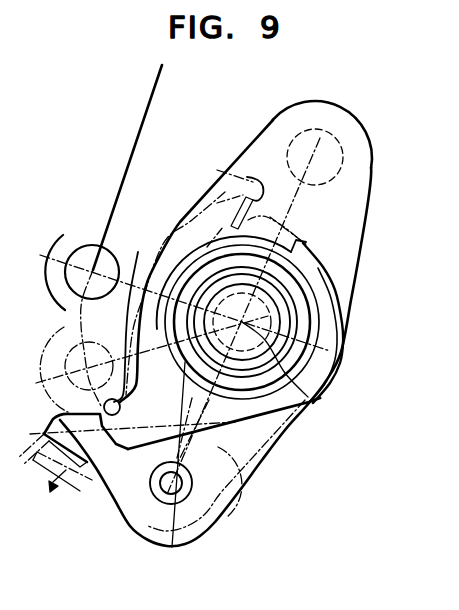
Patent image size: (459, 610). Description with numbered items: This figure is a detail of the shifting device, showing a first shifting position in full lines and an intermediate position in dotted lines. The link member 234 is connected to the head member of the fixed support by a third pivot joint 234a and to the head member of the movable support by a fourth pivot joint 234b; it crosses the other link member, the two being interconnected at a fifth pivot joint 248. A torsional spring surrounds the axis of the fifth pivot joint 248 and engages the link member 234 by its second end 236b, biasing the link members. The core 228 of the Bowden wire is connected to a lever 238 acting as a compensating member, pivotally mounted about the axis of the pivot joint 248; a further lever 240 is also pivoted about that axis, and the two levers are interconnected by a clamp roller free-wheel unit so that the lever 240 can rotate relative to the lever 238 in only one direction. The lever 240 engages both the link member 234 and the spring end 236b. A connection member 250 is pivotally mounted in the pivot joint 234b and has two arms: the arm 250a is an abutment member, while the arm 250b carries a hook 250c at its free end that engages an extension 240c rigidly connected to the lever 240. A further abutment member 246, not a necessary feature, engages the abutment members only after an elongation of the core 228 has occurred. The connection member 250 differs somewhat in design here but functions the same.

The core of the Bowden wire 228 is at (146, 109).
The link member 234 is at (343, 252).
The third pivot joint 234a is at (327, 156).
The fourth pivot joint 234b is at (172, 547).
The second end of the torsional spring 236b is at (116, 415).
The lever acting as compensating member 238 is at (63, 245).
The lever 240 is at (326, 337).
The extension of the lever 240c is at (305, 243).
The abutment member 246 is at (88, 462).
The fifth pivot joint 248 is at (312, 399).
The connection member 250 is at (247, 487).
The arm of the connection member 250a is at (73, 488).
The arm of the connection member 250b is at (139, 250).
The hook 250c is at (217, 170).